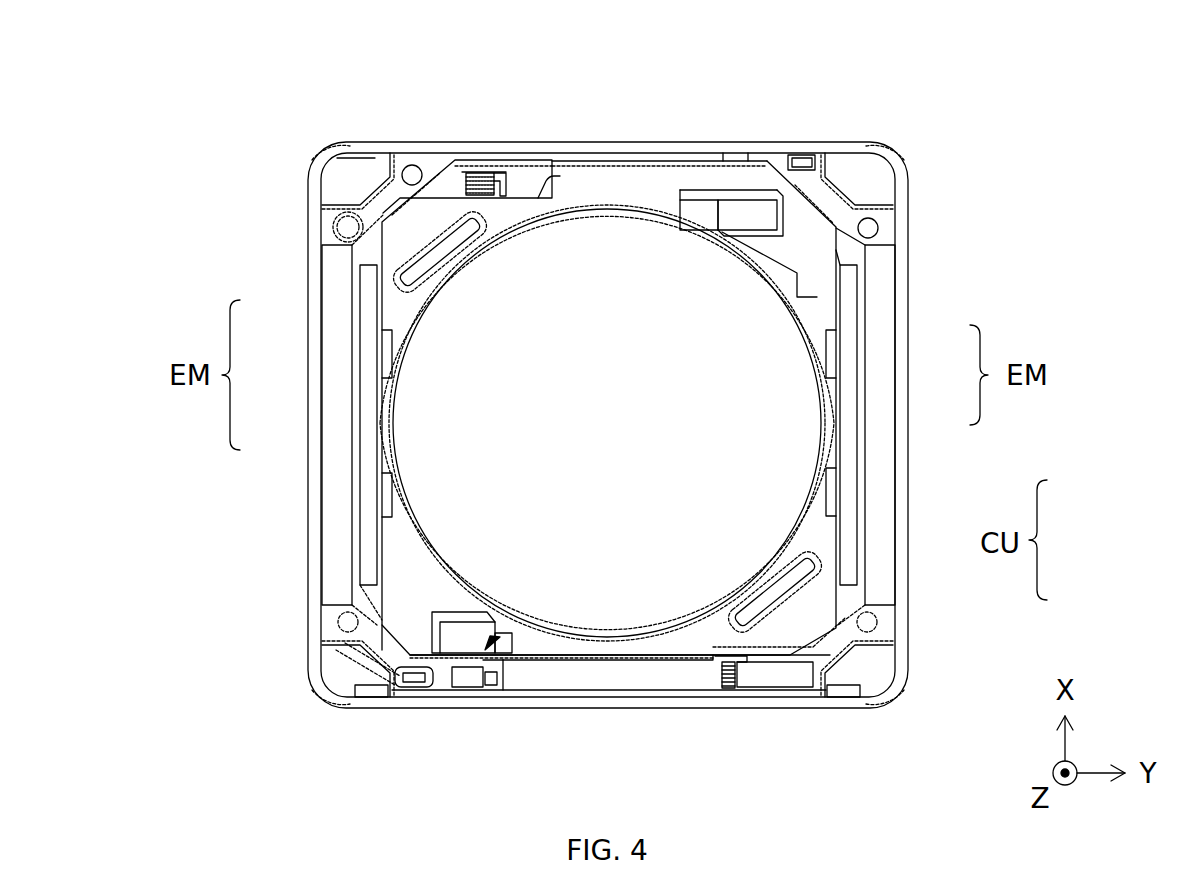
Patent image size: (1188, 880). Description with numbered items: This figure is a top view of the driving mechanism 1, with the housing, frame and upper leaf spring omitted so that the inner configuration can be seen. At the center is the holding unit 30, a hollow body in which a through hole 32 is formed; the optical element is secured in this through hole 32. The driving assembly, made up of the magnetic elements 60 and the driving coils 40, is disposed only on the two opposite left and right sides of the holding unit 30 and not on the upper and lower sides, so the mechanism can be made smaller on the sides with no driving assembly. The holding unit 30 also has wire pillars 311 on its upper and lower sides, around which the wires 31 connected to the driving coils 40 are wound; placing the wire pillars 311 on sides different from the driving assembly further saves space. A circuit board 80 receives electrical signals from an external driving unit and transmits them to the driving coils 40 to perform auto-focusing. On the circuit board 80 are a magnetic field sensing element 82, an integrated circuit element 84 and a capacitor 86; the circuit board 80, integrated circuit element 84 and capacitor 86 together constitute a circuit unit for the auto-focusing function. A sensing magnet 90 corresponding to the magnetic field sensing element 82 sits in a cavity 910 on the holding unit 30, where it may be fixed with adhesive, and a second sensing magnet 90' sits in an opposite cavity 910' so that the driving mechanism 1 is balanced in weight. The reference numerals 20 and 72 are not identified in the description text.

The driving mechanism 1 is at (122, 118).
The housing 20 is at (338, 182).
The holding unit 30 is at (815, 236).
The wire 31 is at (500, 172).
The wire pillar 311 is at (478, 168).
The through hole 32 is at (765, 487).
The driving coil 40 is at (370, 430).
The magnetic element 60 is at (338, 320).
The flexible circuit portion 72 is at (345, 636).
The circuit board 80 is at (560, 692).
The magnetic field sensing element 82 is at (470, 676).
The integrated circuit element 84 is at (620, 676).
The capacitor 86 is at (790, 680).
The sensing magnet 90 is at (422, 687).
The cavity 910 is at (459, 697).
The sensing magnet 90' is at (731, 166).
The cavity 910' is at (682, 163).